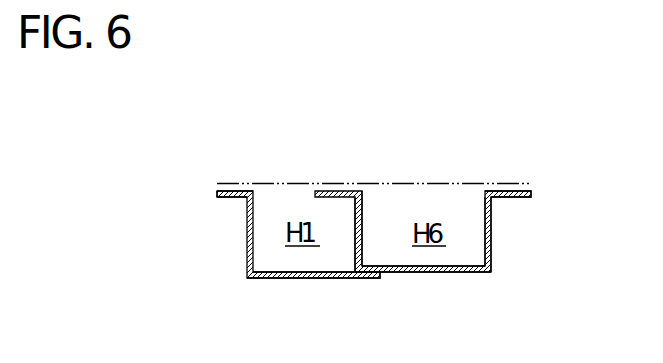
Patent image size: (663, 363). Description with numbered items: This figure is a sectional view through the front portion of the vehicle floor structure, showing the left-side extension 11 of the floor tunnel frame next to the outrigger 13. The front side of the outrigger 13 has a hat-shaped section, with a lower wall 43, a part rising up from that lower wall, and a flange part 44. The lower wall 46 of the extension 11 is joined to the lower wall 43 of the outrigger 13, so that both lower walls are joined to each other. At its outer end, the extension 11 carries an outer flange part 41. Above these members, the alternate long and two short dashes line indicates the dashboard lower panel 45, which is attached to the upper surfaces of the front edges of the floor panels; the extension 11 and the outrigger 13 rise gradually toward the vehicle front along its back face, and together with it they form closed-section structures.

The extension 11 is at (245, 260).
The outrigger 13 is at (492, 232).
The outer flange part 41 is at (227, 197).
The lower wall 43 is at (448, 273).
The flange part 44 is at (326, 197).
The dashboard lower panel 45 is at (432, 182).
The lower wall 46 is at (310, 278).